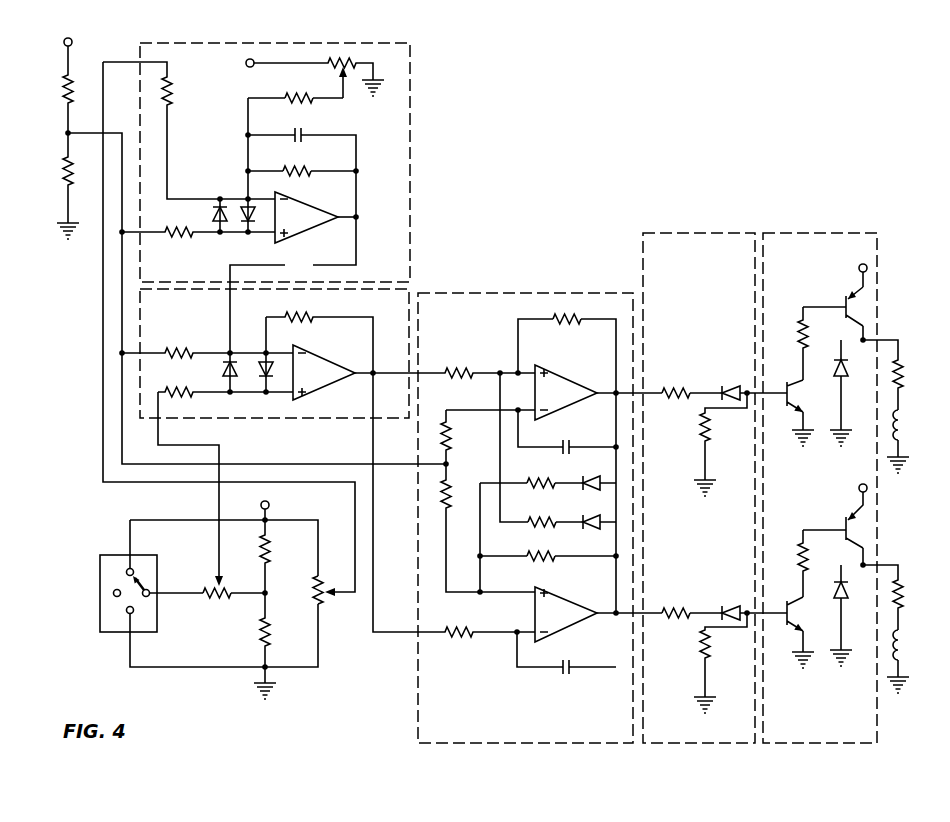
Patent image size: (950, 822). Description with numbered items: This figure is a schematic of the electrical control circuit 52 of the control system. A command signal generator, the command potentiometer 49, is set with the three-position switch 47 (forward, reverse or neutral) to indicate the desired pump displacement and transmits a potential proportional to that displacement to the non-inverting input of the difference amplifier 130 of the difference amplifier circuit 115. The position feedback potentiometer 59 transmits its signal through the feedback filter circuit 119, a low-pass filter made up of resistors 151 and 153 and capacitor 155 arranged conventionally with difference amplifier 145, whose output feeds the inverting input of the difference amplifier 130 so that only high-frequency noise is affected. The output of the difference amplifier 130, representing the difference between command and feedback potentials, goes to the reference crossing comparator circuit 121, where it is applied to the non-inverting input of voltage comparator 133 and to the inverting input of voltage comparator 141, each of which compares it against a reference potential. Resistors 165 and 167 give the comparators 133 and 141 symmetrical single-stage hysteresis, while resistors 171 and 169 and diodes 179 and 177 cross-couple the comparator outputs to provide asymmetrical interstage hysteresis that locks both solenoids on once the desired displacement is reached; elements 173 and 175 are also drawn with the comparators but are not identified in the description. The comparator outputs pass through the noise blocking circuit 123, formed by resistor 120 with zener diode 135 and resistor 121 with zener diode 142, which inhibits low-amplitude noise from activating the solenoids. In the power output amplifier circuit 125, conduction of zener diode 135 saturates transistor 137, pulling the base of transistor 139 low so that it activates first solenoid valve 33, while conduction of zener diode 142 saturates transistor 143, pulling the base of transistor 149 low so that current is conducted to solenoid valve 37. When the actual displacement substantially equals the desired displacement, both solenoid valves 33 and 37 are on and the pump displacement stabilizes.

The electrical control circuit 52 is at (562, 117).
The feedback filter circuit 119 is at (343, 44).
The resistor 151 is at (290, 93).
The capacitor 155 is at (303, 131).
The resistor 153 is at (307, 168).
The difference amplifier 145 is at (303, 203).
The difference amplifier 130 is at (316, 356).
The difference amplifier circuit 115 is at (288, 419).
The reference crossing comparator circuit 121 is at (545, 293).
The resistor 165 is at (563, 326).
The voltage comparator 133 is at (553, 375).
The capacitor 173 is at (572, 442).
The resistor 171 is at (543, 476).
The diode 179 is at (606, 470).
The resistor 169 is at (543, 515).
The resistor 167 is at (530, 552).
The diode 177 is at (600, 531).
The voltage comparator 141 is at (558, 596).
The capacitor 175 is at (572, 674).
The resistor 120 is at (690, 386).
The zener diode 135 is at (742, 386).
The zener diode 142 is at (742, 605).
The noise blocking circuit 123 is at (698, 233).
The power output amplifier circuit 125 is at (795, 233).
The transistor 139 is at (845, 299).
The transistor 137 is at (794, 404).
The transistor 143 is at (787, 603).
The transistor 149 is at (846, 514).
The first solenoid valve 33 is at (905, 425).
The solenoid valve 37 is at (905, 645).
The three-position switch 47 is at (100, 571).
The command potentiometer 49 is at (220, 600).
The feedback potentiometer 59 is at (309, 588).